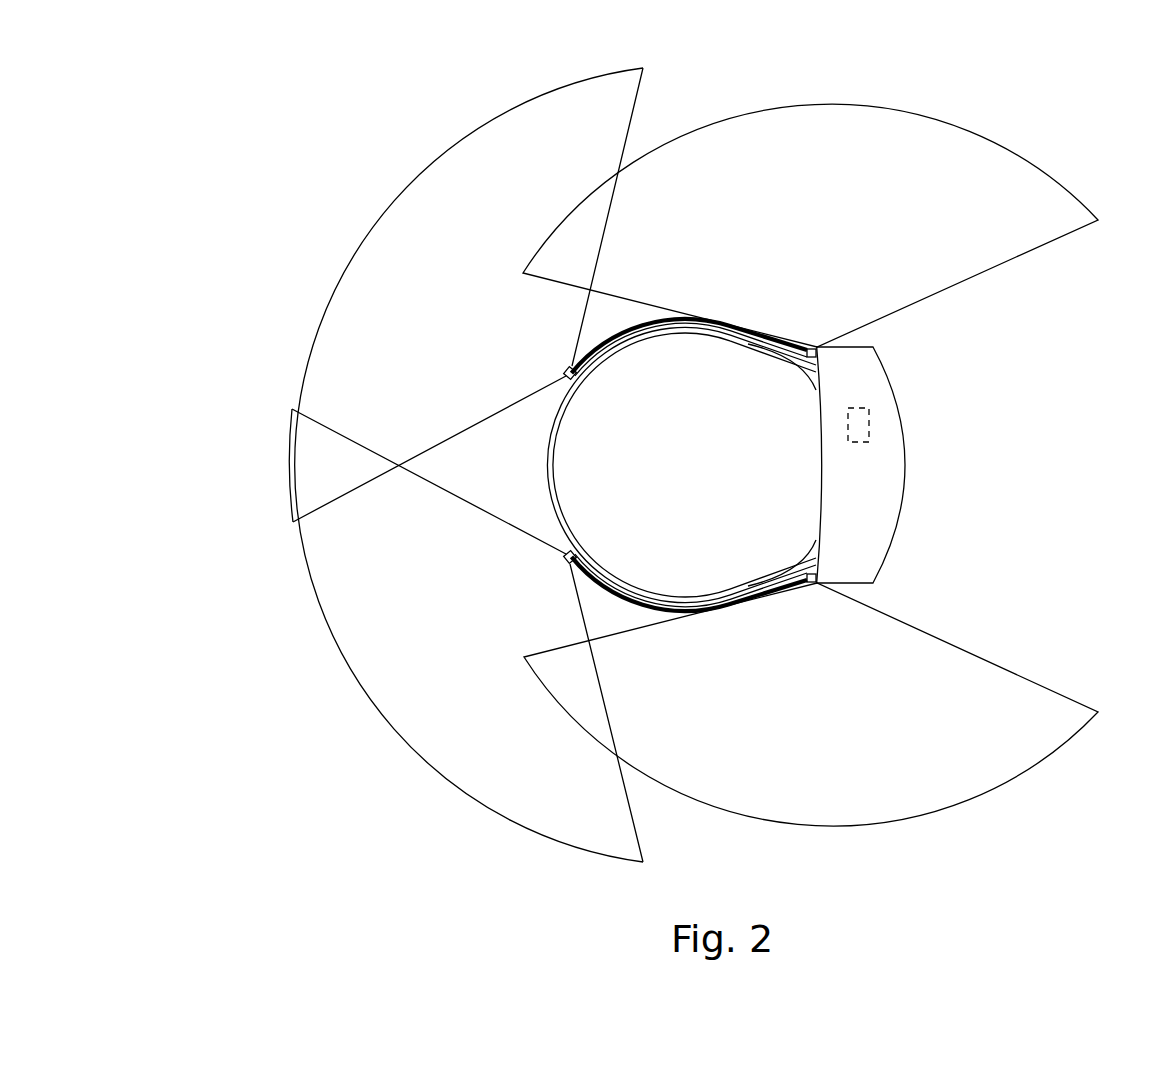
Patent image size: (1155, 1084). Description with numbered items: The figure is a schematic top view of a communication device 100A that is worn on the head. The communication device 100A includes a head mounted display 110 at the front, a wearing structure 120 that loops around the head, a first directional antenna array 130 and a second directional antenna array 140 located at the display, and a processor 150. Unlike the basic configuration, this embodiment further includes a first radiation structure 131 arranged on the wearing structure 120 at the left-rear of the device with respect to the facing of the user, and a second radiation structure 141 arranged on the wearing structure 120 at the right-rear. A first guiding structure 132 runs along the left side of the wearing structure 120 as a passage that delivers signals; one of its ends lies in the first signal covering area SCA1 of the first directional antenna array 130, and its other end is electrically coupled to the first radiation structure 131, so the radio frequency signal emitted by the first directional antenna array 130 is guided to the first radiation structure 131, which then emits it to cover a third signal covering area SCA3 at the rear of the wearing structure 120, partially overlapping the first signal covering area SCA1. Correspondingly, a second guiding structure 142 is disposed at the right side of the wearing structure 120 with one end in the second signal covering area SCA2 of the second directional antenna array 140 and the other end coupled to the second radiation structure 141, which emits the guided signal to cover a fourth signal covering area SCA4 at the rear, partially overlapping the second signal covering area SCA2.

The communication device 100A is at (1001, 325).
The head mounted display 110 is at (880, 510).
The wearing structure 120 is at (557, 517).
The first directional antenna array 130 is at (874, 349).
The first radiation structure 131 is at (566, 372).
The first guiding structure 132 is at (602, 345).
The second directional antenna array 140 is at (840, 581).
The second radiation structure 141 is at (566, 558).
The second guiding structure 142 is at (601, 586).
The processor 150 is at (863, 425).
The first signal covering area SCA1 is at (776, 128).
The second signal covering area SCA2 is at (777, 804).
The third signal covering area SCA3 is at (400, 227).
The fourth signal covering area SCA4 is at (400, 703).